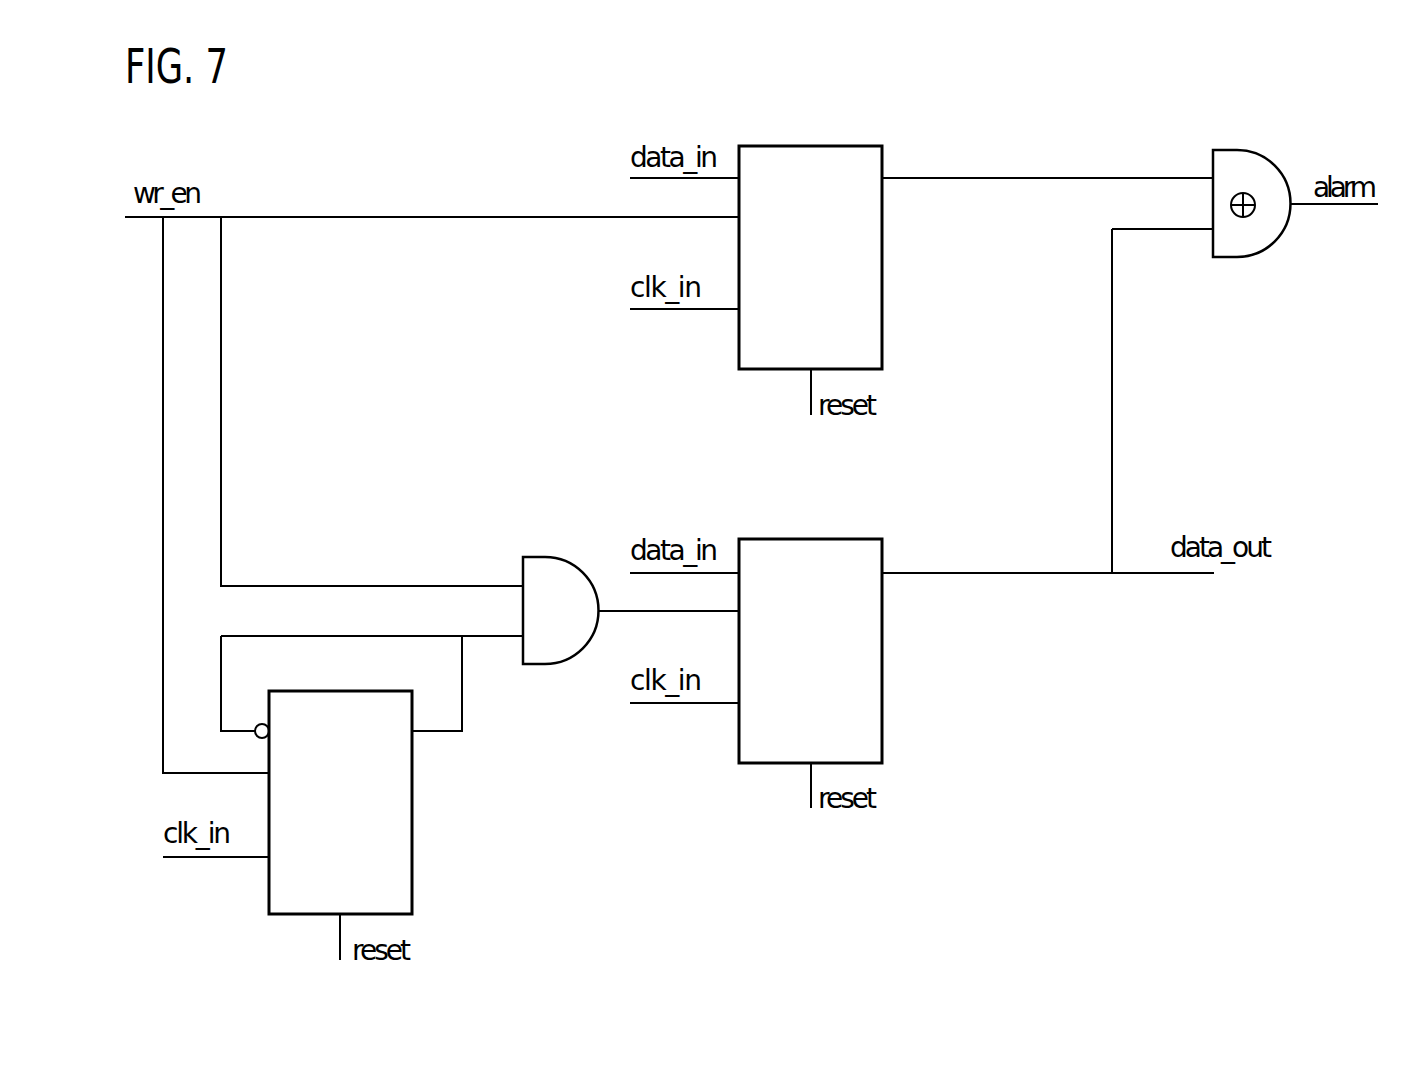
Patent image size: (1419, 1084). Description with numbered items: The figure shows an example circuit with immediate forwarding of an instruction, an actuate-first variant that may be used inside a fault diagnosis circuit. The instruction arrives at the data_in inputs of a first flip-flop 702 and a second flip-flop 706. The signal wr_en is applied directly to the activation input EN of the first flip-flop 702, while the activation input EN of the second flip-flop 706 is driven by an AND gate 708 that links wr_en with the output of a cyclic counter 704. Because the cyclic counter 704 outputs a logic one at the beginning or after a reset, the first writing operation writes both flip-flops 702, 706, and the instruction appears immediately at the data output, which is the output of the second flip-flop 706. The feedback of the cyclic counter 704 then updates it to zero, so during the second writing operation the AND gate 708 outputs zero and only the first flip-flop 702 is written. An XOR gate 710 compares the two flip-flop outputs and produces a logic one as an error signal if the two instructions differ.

The first flip-flop 702 is at (806, 146).
The cyclic counter 704 is at (413, 861).
The second flip-flop 706 is at (806, 539).
The AND gate 708 is at (548, 557).
The XOR gate 710 is at (1238, 150).